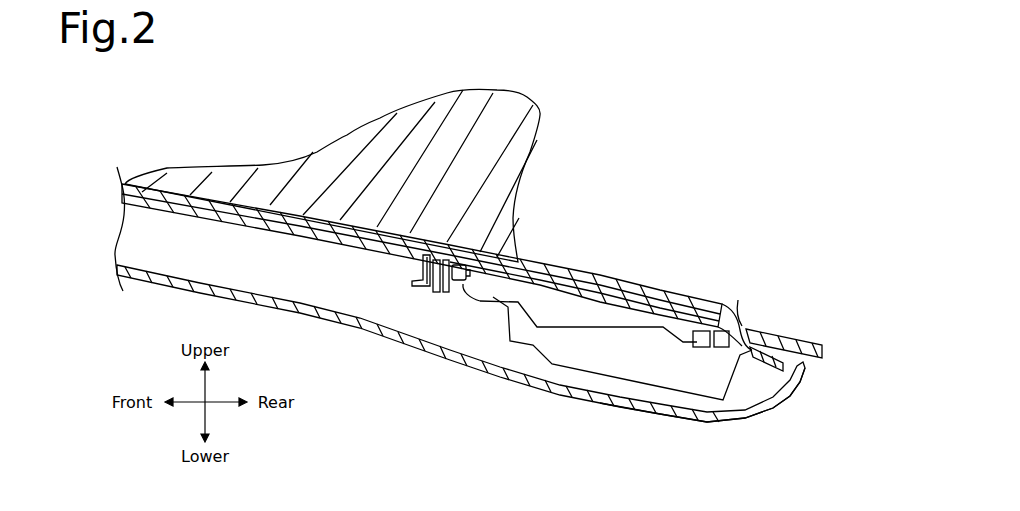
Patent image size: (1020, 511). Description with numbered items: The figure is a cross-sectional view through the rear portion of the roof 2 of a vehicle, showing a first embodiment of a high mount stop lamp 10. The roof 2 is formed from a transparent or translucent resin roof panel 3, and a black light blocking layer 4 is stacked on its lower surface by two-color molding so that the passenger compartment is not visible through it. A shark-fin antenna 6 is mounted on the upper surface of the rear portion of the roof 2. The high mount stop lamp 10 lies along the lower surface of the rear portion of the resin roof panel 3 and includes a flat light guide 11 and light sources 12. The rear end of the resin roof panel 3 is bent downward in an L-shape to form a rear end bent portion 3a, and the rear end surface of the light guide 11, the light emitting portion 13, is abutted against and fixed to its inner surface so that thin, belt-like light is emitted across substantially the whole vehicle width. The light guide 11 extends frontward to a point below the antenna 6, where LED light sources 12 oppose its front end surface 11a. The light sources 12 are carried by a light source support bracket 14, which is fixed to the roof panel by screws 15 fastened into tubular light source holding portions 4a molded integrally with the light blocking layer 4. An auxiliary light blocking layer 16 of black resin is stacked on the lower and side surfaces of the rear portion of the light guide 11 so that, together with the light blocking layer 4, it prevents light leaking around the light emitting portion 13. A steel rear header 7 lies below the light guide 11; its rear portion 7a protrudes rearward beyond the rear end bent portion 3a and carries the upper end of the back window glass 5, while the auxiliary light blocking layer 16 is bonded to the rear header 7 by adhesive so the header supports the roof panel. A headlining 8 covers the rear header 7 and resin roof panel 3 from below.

The roof 2 is at (606, 244).
The resin roof panel 3 is at (230, 206).
The rear end bent portion 3a is at (745, 322).
The light blocking layer 4 is at (272, 228).
The light source holding portion 4a is at (413, 268).
The back window glass 5 is at (800, 333).
The antenna 6 is at (500, 123).
The rear header 7 is at (533, 360).
The rear portion 7a is at (763, 362).
The headlining 8 is at (637, 412).
The high mount stop lamp 10 is at (478, 306).
The light guide 11 is at (607, 307).
The front end surface 11a is at (463, 300).
The light source 12 is at (458, 282).
The light emitting portion 13 is at (738, 302).
The light source support bracket 14 is at (434, 293).
The screw 15 is at (413, 292).
The auxiliary light blocking layer 16 is at (700, 353).